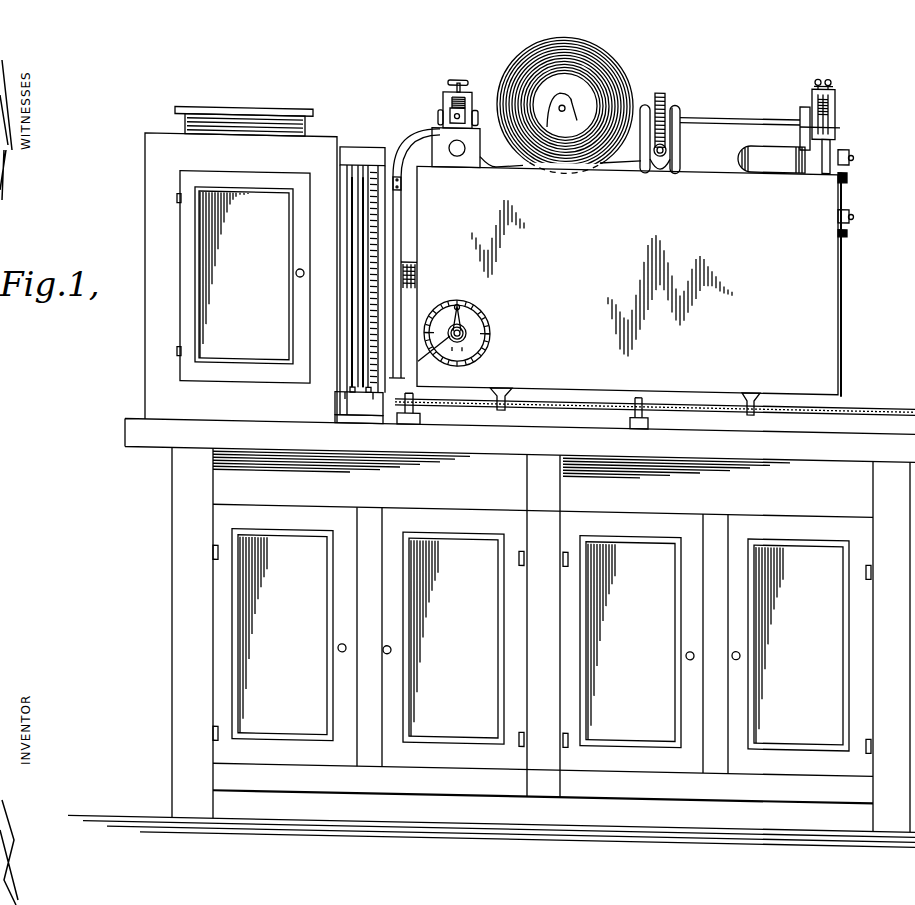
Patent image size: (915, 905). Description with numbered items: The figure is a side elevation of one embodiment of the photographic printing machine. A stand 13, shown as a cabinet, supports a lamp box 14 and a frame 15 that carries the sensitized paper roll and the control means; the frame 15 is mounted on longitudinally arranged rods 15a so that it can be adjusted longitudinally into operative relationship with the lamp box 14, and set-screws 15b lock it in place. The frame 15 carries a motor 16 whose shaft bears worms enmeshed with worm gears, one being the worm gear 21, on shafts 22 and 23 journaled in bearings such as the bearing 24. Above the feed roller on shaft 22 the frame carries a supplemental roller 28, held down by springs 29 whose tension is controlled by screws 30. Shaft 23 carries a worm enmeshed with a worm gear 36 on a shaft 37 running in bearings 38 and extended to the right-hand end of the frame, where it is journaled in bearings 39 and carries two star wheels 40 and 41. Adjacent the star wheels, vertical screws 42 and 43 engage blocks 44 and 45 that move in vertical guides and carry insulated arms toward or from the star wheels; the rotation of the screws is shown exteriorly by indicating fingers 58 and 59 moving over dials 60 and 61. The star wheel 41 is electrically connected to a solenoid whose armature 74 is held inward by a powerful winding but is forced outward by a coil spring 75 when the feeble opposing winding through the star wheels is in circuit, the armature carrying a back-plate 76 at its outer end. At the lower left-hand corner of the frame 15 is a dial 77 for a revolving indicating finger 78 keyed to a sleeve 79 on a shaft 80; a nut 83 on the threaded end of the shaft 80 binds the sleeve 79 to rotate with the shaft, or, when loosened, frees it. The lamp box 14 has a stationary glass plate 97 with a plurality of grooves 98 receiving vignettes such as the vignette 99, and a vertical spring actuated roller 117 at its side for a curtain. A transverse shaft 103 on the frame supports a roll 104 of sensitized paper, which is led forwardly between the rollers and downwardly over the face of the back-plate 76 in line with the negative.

The stand 13 is at (172, 617).
The lamp box 14 is at (146, 212).
The frame 15 is at (837, 315).
The longitudinally arranged rods 15a is at (680, 396).
The set-screws 15b is at (510, 395).
The motor 16 is at (760, 152).
The worm gear 21 is at (683, 131).
The shaft 22 is at (457, 147).
The shaft 23 is at (660, 144).
The bearing 24 is at (482, 148).
The supplemental roller 28 is at (438, 108).
The springs 29 is at (453, 94).
The screws 30 is at (452, 77).
The worm gear 36 is at (660, 80).
The shaft 37 is at (710, 104).
The bearings 38 is at (677, 89).
The bearings 39 is at (800, 96).
The star wheel 40 is at (830, 111).
The star wheel 41 is at (813, 109).
The vertical screw 42 is at (830, 60).
The vertical screw 43 is at (818, 66).
The block 44 is at (835, 86).
The block 45 is at (817, 87).
The indicating finger 58 is at (850, 146).
The indicating finger 59 is at (847, 206).
The dial 60 is at (847, 176).
The dial 61 is at (847, 226).
The armature 74 is at (410, 267).
The coil spring 75 is at (405, 255).
The back-plate 76 is at (395, 302).
The dial 77 is at (487, 337).
The revolving indicating finger 78 is at (462, 313).
The sleeve 79 is at (433, 359).
The shaft 80 is at (467, 324).
The nut 83 is at (463, 354).
The stationary glass plate 97 is at (362, 240).
The grooves 98 is at (340, 146).
The vignette 99 is at (352, 216).
The transverse shaft 103 is at (562, 100).
The roll of sensitized paper 104 is at (523, 58).
The vertical spring actuated roller 117 is at (378, 361).